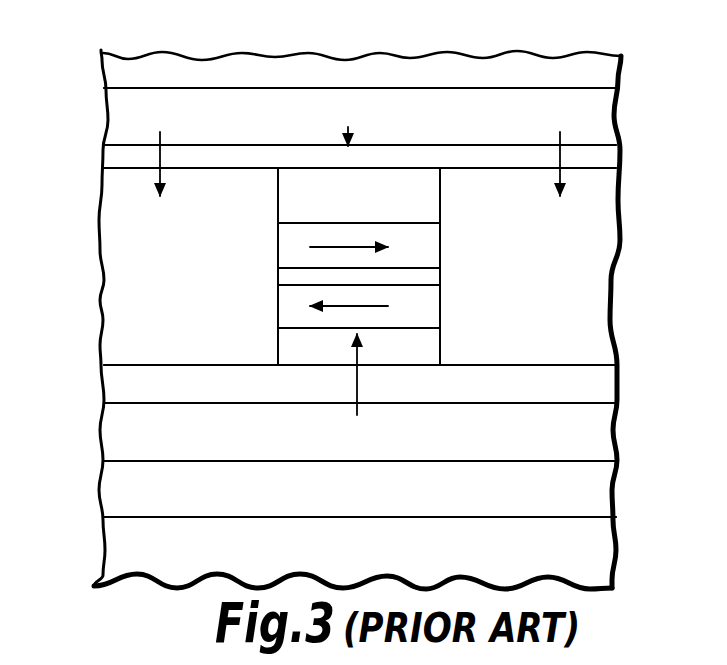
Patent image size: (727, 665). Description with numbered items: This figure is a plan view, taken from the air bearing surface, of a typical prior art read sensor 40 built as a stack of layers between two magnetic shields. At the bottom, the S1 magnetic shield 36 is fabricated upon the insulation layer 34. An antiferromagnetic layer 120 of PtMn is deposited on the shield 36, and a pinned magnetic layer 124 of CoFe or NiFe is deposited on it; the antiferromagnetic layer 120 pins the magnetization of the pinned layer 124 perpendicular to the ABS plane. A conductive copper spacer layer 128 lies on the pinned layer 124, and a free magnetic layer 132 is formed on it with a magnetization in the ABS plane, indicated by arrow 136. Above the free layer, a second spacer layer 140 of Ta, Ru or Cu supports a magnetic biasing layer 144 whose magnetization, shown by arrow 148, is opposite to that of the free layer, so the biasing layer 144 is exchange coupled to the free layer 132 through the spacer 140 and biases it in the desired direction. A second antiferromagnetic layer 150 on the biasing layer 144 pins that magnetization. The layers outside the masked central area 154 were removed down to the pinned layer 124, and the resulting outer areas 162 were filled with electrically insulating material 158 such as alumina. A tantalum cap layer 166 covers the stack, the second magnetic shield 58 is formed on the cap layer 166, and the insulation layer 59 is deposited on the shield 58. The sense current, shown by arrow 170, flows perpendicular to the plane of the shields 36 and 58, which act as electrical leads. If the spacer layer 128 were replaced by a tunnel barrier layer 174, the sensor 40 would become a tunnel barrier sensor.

The sensor 40 is at (197, 48).
The insulation layer 59 is at (602, 71).
The second magnetic shield 58 is at (608, 114).
The cap layer 166 is at (598, 160).
The electrically insulating material 158 is at (118, 278).
The outer areas 162 is at (360, 144).
The central area 154 is at (352, 119).
The second antiferromagnetic layer 150 is at (425, 201).
The magnetization direction arrow of biasing layer 148 is at (336, 246).
The magnetic biasing layer 144 is at (422, 253).
The spacer layer 140 is at (425, 279).
The magnetization direction arrow of free magnetic layer 136 is at (345, 305).
The free magnetic layer 132 is at (422, 313).
The spacer layer 128 is at (422, 351).
The tunnel barrier layer 174 is at (292, 343).
The sense current direction arrow 170 is at (359, 387).
The pinned magnetic layer 124 is at (598, 388).
The antiferromagnetic layer 120 is at (598, 433).
The S1 magnetic shield 36 is at (598, 488).
The insulation layer 34 is at (598, 549).